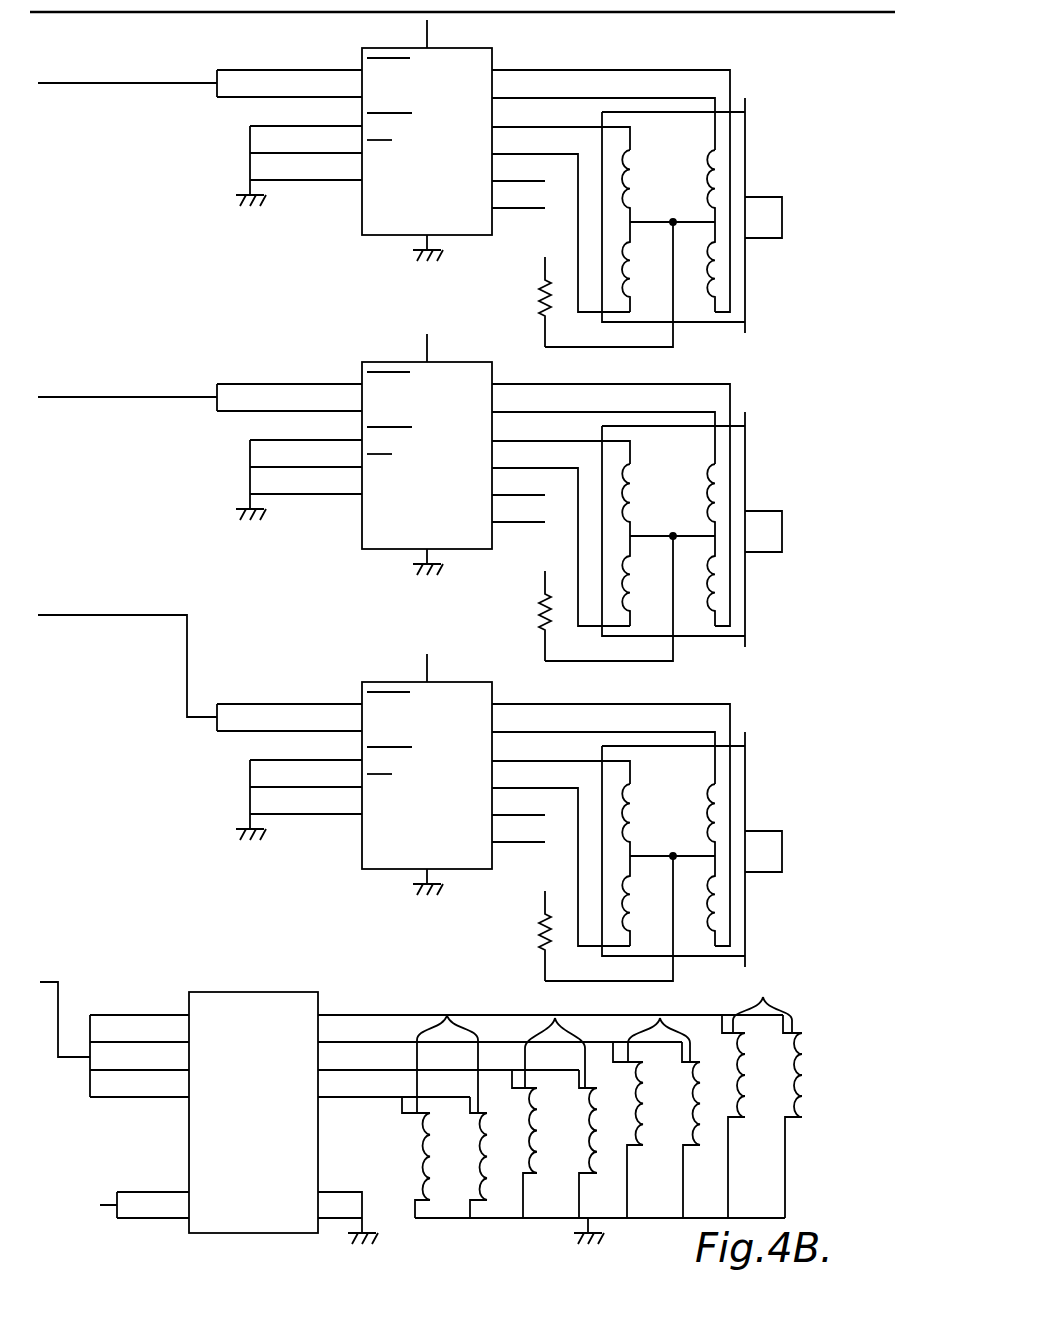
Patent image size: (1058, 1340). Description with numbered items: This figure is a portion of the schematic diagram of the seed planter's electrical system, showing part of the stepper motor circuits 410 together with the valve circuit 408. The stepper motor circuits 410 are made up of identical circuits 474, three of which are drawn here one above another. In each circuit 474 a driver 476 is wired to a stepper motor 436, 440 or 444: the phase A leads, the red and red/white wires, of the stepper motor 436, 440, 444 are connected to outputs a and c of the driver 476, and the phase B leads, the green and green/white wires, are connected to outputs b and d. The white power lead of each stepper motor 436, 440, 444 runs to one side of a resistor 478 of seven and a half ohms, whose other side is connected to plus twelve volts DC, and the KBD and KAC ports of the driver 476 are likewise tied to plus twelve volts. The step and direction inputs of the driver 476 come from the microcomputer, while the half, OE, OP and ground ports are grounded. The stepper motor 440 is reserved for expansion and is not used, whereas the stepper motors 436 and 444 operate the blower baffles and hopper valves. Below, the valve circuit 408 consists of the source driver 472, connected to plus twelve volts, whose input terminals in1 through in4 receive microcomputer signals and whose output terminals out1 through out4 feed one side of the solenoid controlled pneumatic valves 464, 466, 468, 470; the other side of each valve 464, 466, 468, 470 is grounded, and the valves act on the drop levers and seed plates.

The stepper motor circuits 410 is at (830, 92).
The stepper motor 436 is at (747, 167).
The stepper motor 440 is at (747, 472).
The stepper motor 444 is at (748, 812).
The circuit 474 is at (783, 302).
The driver 476 is at (299, 872).
The resistor 478 is at (537, 954).
The source driver 472 is at (267, 992).
The solenoid controlled pneumatic valve 470 is at (447, 1015).
The solenoid controlled pneumatic valve 468 is at (555, 1018).
The solenoid controlled pneumatic valve 466 is at (660, 1018).
The solenoid controlled pneumatic valve 464 is at (763, 997).
The valve circuit 408 is at (402, 1233).